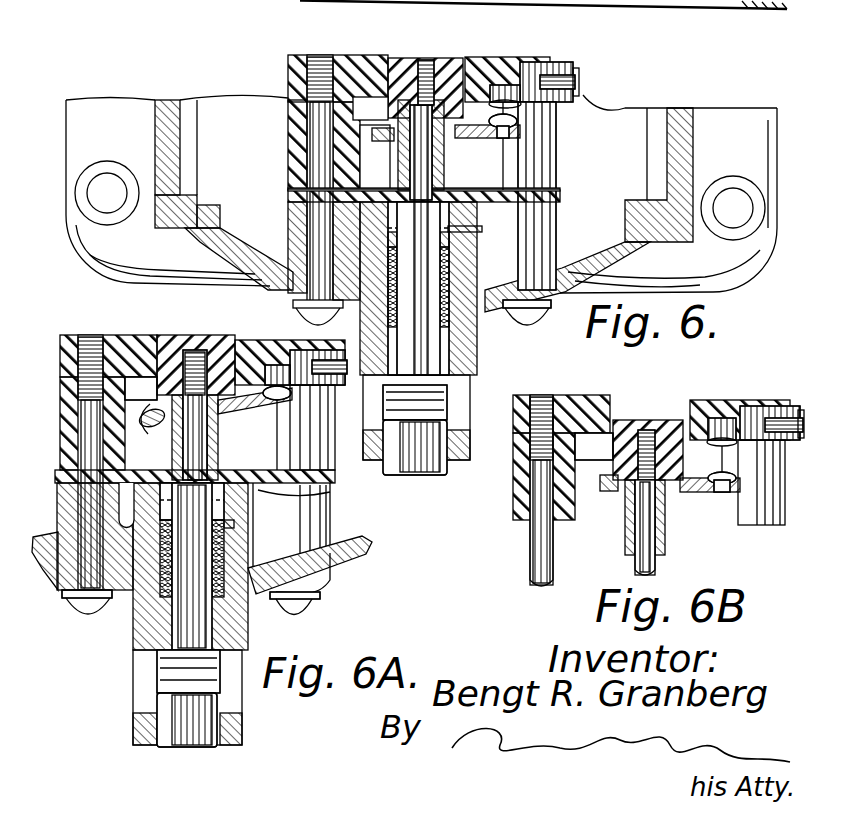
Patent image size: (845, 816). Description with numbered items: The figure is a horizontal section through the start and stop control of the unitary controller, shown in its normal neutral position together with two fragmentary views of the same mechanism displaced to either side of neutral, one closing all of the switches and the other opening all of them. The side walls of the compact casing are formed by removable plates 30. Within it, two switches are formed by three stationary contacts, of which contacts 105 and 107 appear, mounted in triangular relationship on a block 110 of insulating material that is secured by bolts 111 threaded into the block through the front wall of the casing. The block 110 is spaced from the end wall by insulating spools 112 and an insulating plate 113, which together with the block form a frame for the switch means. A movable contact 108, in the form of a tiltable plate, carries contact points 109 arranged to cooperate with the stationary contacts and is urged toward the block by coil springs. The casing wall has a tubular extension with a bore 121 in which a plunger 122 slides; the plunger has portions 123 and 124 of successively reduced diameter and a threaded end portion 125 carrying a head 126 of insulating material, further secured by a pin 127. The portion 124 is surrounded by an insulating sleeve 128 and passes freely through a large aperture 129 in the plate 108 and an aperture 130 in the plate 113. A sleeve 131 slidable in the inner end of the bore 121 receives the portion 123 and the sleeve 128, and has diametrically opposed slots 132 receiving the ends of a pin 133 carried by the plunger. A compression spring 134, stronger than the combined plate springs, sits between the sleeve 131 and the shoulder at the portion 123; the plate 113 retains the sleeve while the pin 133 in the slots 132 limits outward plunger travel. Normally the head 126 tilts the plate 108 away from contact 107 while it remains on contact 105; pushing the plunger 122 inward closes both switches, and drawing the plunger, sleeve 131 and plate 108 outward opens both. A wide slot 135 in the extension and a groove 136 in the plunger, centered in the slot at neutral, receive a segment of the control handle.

In FIG. 6, the plates 30 is at (168, 134).
In FIG. 6A, the stationary contact 105 is at (130, 337).
In FIG. 6B, the stationary contact 105 is at (600, 462).
In FIG. 6, the stationary contact 107 is at (575, 88).
In FIG. 6B, the stationary contact 107 is at (735, 430).
In FIG. 6, the movable contact 108 is at (520, 142).
In FIG. 6A, the movable contact 108 is at (240, 412).
In FIG. 6B, the movable contact 108 is at (700, 495).
In FIG. 6, the contact points 109 is at (510, 118).
In FIG. 6A, the contact points 109 is at (147, 433).
In FIG. 6, the block 110 is at (362, 43).
In FIG. 6, the bolts 111 is at (320, 212).
In FIG. 6A, the bolts 111 is at (78, 606).
In FIG. 6, the spools 112 is at (290, 133).
In FIG. 6, the plate 113 is at (288, 192).
In FIG. 6, the bore 121 is at (385, 378).
In FIG. 6, the plunger 122 is at (403, 460).
In FIG. 6A, the plunger 122 is at (170, 732).
In FIG. 6, the portion 123 is at (320, 288).
In FIG. 6, the portion 124 is at (420, 158).
In FIG. 6, the threaded end portion 125 is at (428, 72).
In FIG. 6, the head 126 is at (400, 52).
In FIG. 6A, the head 126 is at (172, 338).
In FIG. 6, the pin 127 is at (370, 108).
In FIG. 6, the sleeve 128 is at (445, 178).
In FIG. 6, the aperture 129 is at (377, 147).
In FIG. 6, the aperture 130 is at (375, 157).
In FIG. 6A, the sleeve 131 is at (345, 552).
In FIG. 6, the slots 132 is at (455, 206).
In FIG. 6A, the slots 132 is at (163, 528).
In FIG. 6, the pin 133 is at (462, 230).
In FIG. 6A, the pin 133 is at (222, 540).
In FIG. 6, the compression spring 134 is at (460, 312).
In FIG. 6A, the compression spring 134 is at (162, 548).
In FIG. 6, the slot 135 is at (464, 432).
In FIG. 6, the groove 136 is at (415, 402).
In FIG. 6A, the groove 136 is at (188, 671).